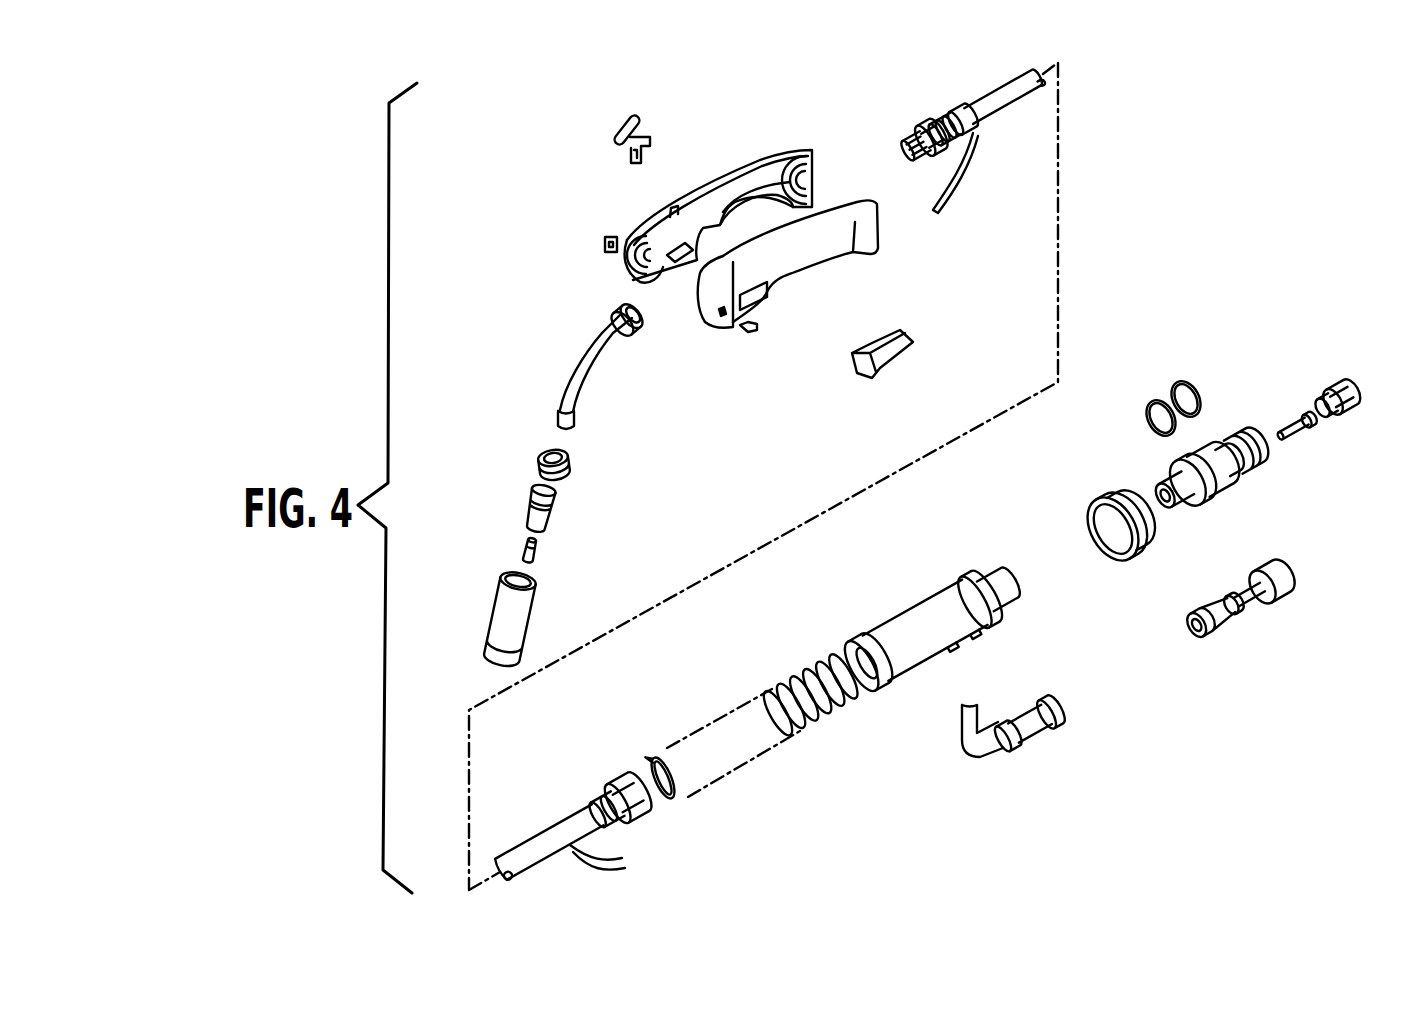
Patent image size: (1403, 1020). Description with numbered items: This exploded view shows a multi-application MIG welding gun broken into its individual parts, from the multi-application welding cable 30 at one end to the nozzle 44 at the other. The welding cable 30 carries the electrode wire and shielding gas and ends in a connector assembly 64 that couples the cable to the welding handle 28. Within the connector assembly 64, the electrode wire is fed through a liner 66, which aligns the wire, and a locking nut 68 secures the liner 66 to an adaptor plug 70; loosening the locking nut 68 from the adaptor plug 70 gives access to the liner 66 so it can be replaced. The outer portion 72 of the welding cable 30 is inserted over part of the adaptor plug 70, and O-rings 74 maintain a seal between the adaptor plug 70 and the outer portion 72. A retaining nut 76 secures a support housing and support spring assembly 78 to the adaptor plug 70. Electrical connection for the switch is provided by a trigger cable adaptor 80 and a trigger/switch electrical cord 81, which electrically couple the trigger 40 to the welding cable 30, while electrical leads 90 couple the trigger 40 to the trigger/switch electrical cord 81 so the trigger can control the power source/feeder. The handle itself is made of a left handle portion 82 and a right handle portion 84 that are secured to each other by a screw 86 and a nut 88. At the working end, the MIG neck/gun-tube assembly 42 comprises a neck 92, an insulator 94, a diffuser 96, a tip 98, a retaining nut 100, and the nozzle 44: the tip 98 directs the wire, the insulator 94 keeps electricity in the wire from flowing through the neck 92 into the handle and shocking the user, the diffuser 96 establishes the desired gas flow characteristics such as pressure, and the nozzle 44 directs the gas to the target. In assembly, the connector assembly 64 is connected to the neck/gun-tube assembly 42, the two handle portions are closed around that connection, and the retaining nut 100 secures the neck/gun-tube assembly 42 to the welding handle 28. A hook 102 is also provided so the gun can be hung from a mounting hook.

The welding handle 28 is at (801, 112).
The multi-application welding cable 30 is at (996, 81).
The trigger 40 is at (906, 350).
The MIG neck/gun-tube assembly 42 is at (512, 283).
The nozzle 44 is at (490, 622).
The connector assembly 64 is at (890, 133).
The liner 66 is at (1298, 425).
The locking nut 68 is at (1343, 381).
The adaptor plug 70 is at (1222, 495).
The outer portion of welding cable 72 is at (1023, 107).
The O-rings 74 is at (1178, 382).
The retaining nut 76 is at (1133, 563).
The support housing and support spring assembly 78 is at (838, 632).
The trigger cable adaptor 80 is at (1224, 626).
The trigger/switch electrical cord 81 is at (1041, 742).
The left handle portion 82 is at (825, 256).
The right handle portion 84 is at (747, 158).
The screw 86 is at (756, 328).
The nut 88 is at (604, 243).
The electrical leads 90 is at (953, 195).
The neck 92 is at (566, 393).
The insulator 94 is at (567, 468).
The diffuser 96 is at (528, 520).
The tip 98 is at (537, 552).
The retaining nut 100 is at (622, 303).
The hook 102 is at (638, 113).